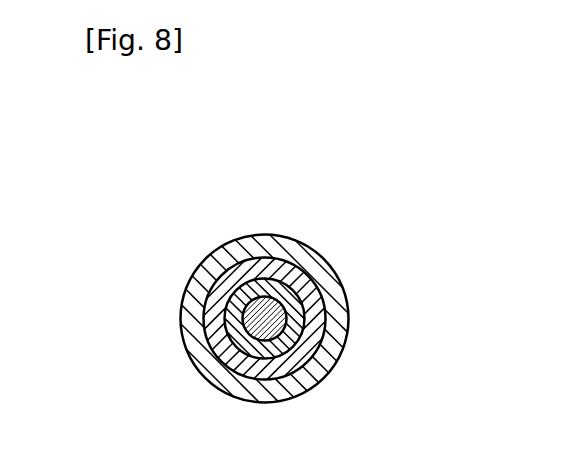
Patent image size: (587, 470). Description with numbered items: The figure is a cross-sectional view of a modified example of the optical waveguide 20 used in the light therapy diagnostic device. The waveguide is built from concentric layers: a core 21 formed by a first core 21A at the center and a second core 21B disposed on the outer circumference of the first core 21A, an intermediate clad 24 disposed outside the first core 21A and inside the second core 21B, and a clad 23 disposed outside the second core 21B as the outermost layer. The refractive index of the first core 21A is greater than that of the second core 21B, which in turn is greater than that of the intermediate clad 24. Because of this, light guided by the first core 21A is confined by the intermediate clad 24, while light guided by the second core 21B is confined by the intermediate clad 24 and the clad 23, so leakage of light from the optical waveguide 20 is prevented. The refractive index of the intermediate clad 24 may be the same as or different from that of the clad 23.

The optical waveguide 20 is at (162, 223).
The core 21 is at (247, 187).
The first core 21A is at (268, 297).
The second core 21B is at (302, 318).
The intermediate clad 24 is at (312, 326).
The clad 23 is at (307, 377).